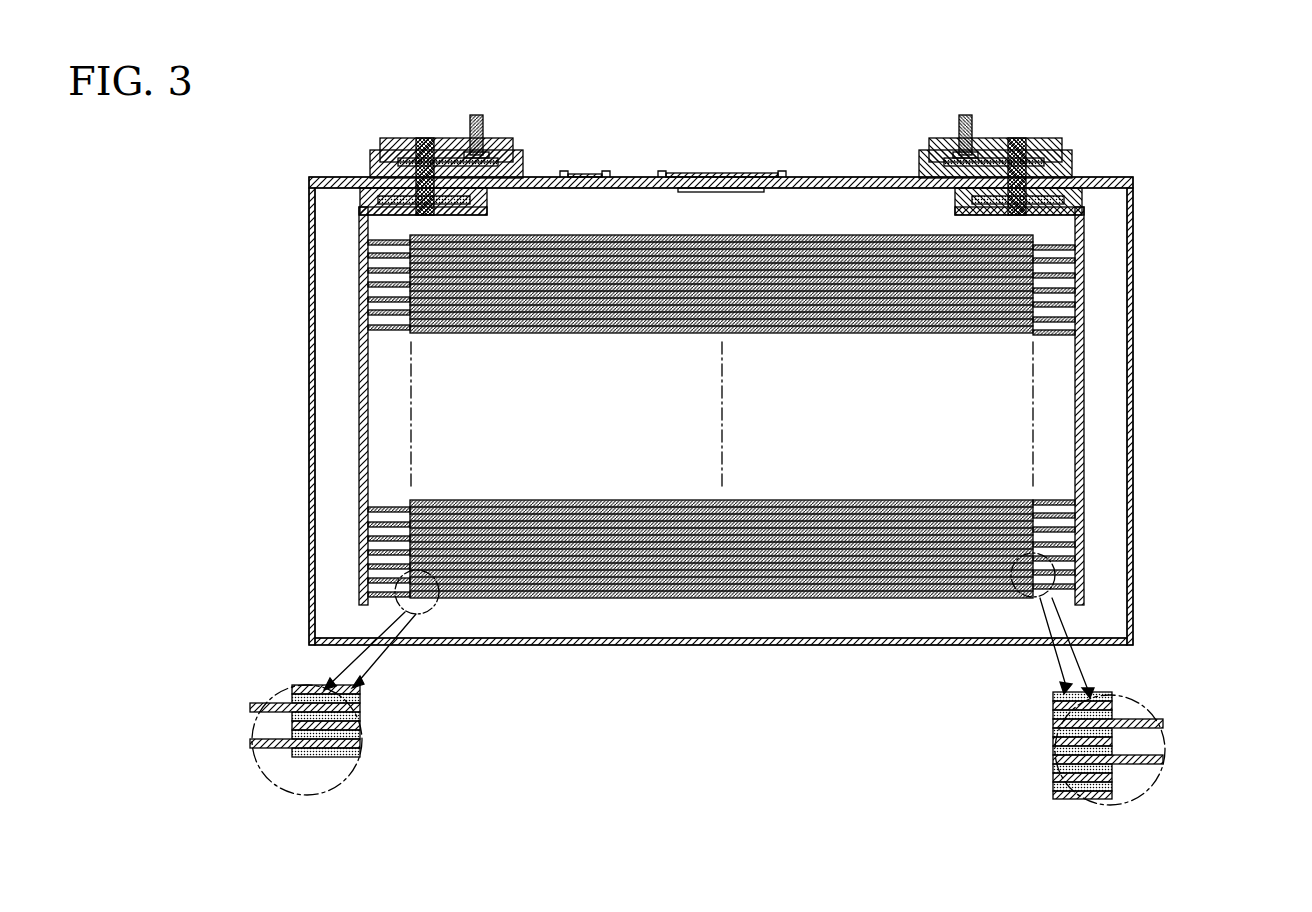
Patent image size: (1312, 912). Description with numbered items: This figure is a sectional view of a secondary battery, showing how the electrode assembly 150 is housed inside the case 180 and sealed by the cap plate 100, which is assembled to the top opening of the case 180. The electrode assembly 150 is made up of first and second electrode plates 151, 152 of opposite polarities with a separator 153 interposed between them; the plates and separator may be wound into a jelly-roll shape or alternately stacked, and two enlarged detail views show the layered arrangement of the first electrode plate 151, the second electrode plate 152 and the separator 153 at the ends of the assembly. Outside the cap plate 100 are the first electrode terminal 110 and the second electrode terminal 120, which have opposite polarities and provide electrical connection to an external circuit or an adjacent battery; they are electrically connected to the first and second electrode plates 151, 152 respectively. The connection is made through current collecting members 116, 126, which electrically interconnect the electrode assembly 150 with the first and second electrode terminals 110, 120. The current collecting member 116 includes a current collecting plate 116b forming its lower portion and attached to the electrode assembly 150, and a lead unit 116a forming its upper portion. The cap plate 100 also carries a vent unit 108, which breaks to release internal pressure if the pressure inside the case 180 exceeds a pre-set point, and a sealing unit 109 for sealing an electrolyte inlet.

The cap plate 100 is at (336, 176).
The vent unit 108 is at (738, 172).
The sealing unit 109 is at (594, 172).
The first electrode terminal 110 is at (1024, 118).
The current collecting member 116 is at (1116, 396).
The lead unit 116a is at (1068, 208).
The current collecting plate 116b is at (1080, 294).
The second electrode terminal 120 is at (420, 118).
The current collecting member 126 is at (362, 295).
The electrode assembly 150 is at (622, 424).
The first electrode plate 151 is at (1042, 592).
The second electrode plate 152 is at (380, 562).
The separator 153 is at (618, 600).
The case 180 is at (1134, 402).